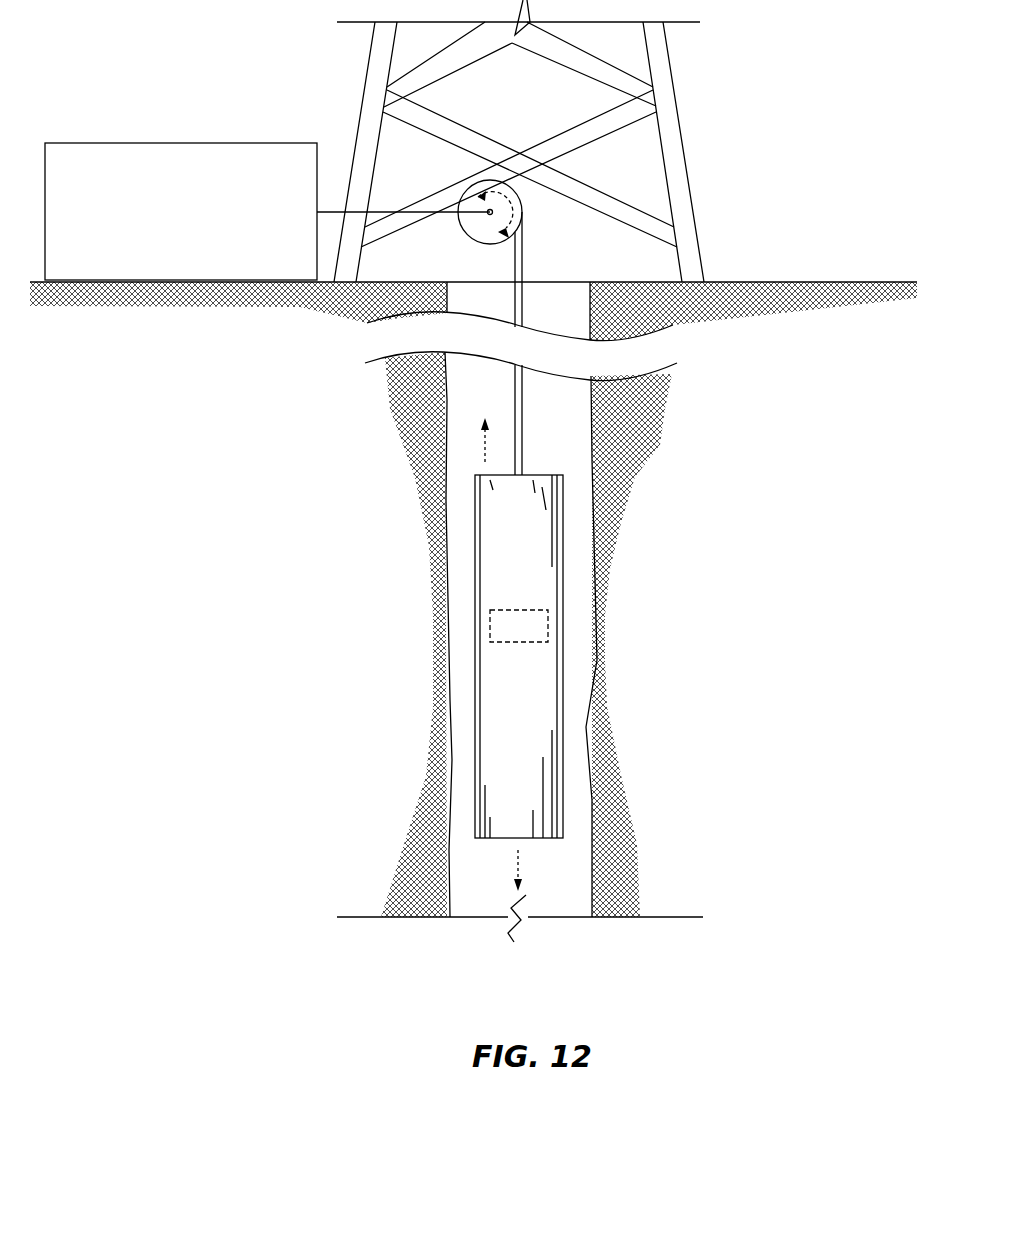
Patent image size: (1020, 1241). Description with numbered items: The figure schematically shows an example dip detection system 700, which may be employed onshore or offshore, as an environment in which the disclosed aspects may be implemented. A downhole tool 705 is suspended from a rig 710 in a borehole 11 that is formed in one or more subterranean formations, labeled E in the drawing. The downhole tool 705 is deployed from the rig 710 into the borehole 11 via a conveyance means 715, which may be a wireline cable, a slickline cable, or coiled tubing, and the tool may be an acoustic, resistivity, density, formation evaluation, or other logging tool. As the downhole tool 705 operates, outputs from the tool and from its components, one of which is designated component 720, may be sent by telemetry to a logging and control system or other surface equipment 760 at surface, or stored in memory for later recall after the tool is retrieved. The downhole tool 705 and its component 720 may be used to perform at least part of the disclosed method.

The dip detection system 700 is at (777, 188).
The rig 710 is at (682, 137).
The surface equipment 760 is at (182, 143).
The conveyance means 715 is at (525, 257).
The downhole tool 705 is at (538, 475).
The component 720 is at (530, 642).
The borehole 11 is at (552, 891).
The earth formation E is at (646, 430).